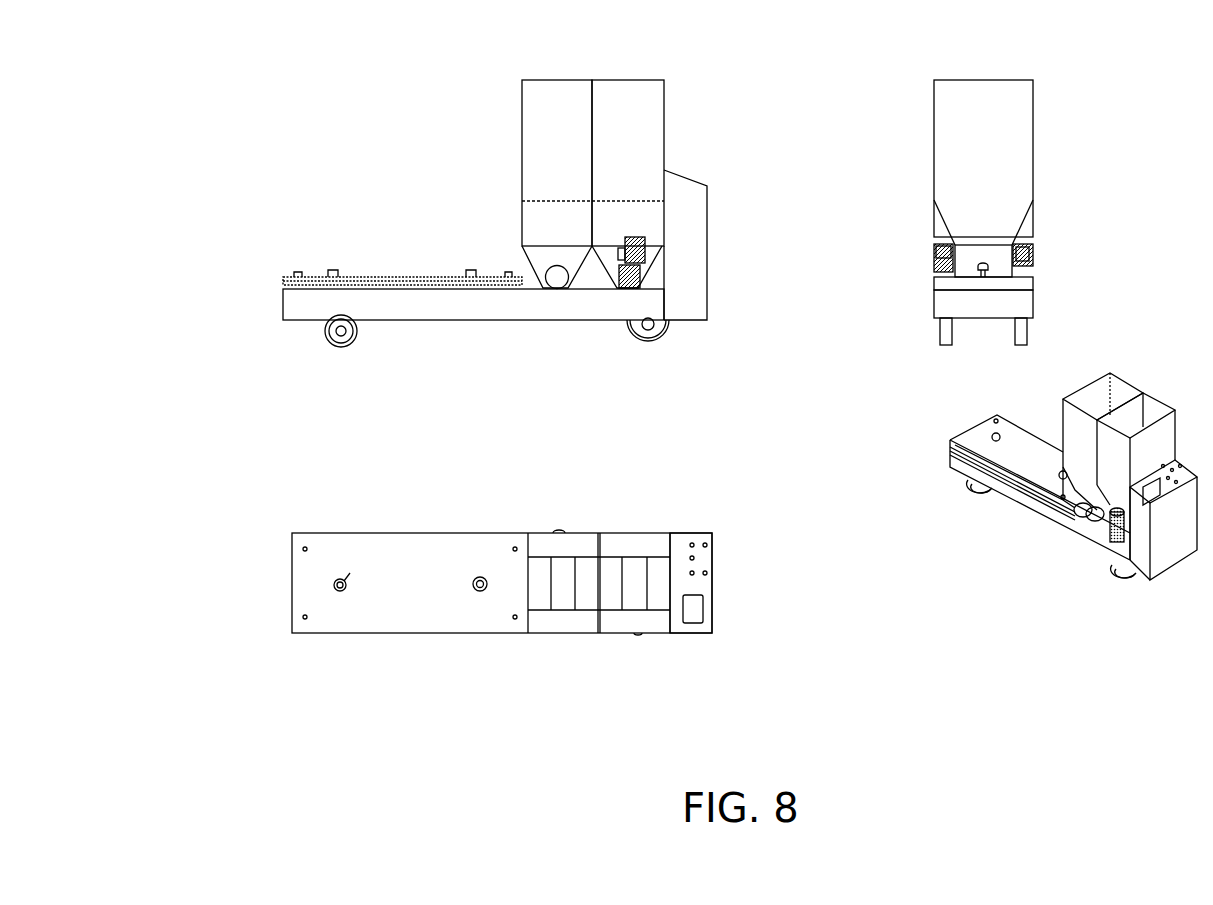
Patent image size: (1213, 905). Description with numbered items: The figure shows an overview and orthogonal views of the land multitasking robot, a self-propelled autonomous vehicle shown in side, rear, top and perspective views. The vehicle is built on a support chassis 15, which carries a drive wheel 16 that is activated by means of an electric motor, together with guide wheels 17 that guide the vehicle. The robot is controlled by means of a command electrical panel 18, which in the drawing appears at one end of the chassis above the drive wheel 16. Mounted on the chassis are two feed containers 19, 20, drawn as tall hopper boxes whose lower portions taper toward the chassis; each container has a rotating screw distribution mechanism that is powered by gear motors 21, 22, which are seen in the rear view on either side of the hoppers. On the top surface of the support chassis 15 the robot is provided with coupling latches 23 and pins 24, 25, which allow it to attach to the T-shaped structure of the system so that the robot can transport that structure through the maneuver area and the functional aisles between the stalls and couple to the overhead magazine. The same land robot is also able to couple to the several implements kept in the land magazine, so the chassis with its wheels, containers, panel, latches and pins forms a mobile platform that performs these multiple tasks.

The support chassis 15 is at (298, 308).
The drive wheel 16 is at (653, 328).
The guide wheels 17 is at (353, 340).
The command electrical panel 18 is at (690, 545).
The feed container 19 is at (547, 79).
The feed container 20 is at (636, 79).
The gear motor 21 is at (930, 238).
The gear motor 22 is at (1037, 240).
The coupling latches 23 is at (294, 536).
The pin 24 is at (370, 551).
The pin 25 is at (476, 590).